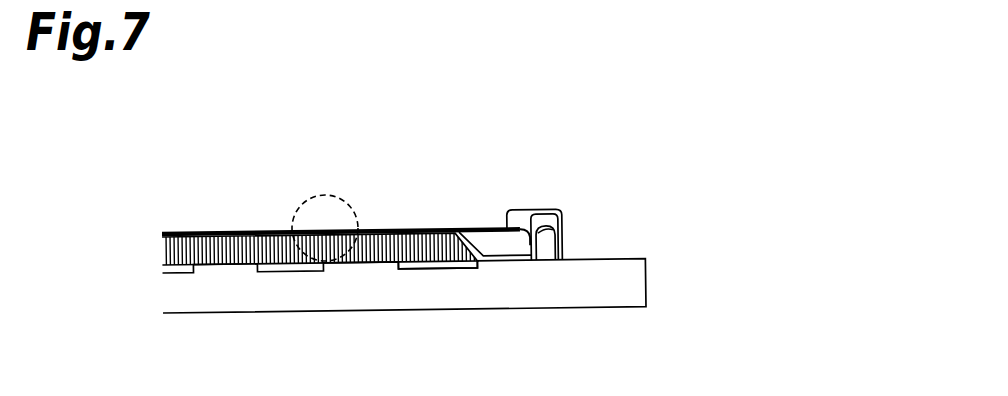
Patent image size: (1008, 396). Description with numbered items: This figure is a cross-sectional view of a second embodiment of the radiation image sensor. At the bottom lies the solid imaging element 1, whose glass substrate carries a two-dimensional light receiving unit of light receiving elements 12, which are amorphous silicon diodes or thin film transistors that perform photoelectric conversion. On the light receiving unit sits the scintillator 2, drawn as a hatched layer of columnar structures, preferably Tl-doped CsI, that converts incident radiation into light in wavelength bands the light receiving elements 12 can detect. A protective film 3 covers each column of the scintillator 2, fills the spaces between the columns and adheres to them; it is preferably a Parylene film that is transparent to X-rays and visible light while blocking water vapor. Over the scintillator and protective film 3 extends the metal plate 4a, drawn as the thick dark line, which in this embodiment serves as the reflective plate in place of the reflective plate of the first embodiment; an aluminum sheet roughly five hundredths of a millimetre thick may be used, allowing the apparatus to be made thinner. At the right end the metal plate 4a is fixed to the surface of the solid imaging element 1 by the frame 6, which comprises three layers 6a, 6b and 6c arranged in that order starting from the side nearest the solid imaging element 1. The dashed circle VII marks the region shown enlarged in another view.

The solid imaging element 1 is at (513, 300).
The scintillator 2 is at (382, 257).
The light receiving elements 12 is at (440, 263).
The protective film 3 is at (490, 256).
The metal plate 4a is at (412, 232).
The frame 6 is at (598, 181).
The first layer of frame 6a is at (589, 235).
The second layer of frame 6b is at (555, 213).
The third layer of frame 6c is at (531, 209).
The detail region VII is at (347, 202).